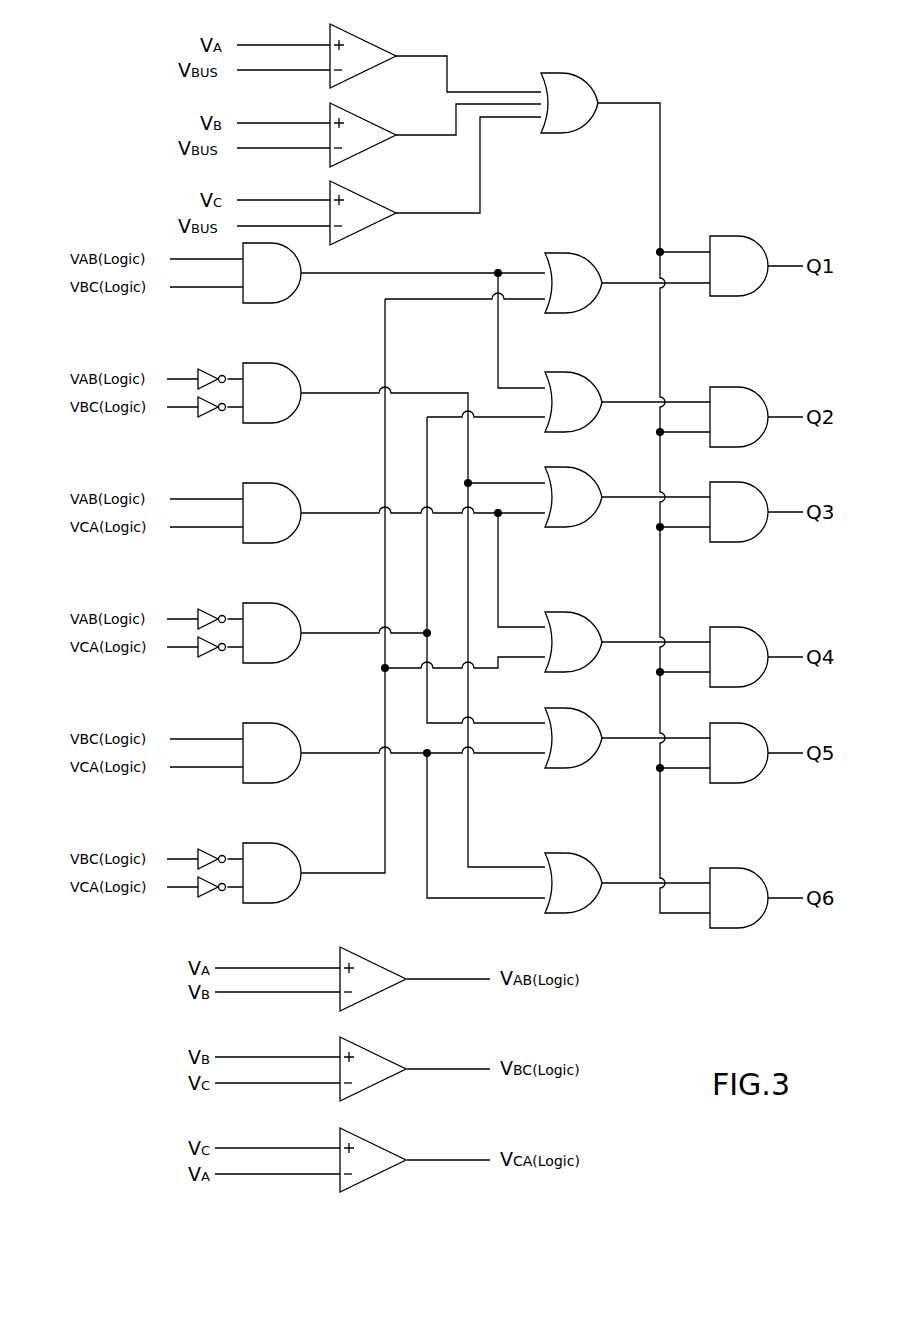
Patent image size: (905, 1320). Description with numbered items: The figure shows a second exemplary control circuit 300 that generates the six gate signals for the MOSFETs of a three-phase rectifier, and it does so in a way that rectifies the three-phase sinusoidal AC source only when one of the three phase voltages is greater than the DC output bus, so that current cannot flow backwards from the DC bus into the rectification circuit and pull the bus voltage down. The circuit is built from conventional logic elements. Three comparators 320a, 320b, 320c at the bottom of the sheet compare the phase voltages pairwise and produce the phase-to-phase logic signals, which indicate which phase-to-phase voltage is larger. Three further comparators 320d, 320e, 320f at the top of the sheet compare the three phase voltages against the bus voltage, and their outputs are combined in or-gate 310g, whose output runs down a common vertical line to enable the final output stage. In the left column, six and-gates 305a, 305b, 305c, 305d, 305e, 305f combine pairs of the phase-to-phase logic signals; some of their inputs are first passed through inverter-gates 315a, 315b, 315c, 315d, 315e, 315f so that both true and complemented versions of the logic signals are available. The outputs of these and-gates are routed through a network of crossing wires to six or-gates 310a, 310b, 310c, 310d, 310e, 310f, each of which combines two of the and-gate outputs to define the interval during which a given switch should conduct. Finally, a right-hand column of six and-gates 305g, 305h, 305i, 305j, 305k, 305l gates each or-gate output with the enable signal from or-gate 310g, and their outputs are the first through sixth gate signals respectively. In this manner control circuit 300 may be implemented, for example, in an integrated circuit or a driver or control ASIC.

The control circuit 300 is at (708, 93).
The and-gate 305a is at (272, 273).
The and-gate 305b is at (272, 393).
The and-gate 305c is at (272, 513).
The and-gate 305d is at (272, 633).
The and-gate 305e is at (272, 753).
The and-gate 305f is at (272, 873).
The and-gate 305g is at (739, 266).
The and-gate 305h is at (739, 417).
The and-gate 305i is at (739, 512).
The and-gate 305j is at (739, 657).
The and-gate 305k is at (739, 753).
The and-gate 305l is at (739, 898).
The or-gate 310a is at (573, 283).
The or-gate 310b is at (573, 402).
The or-gate 310c is at (573, 497).
The or-gate 310d is at (573, 642).
The or-gate 310e is at (573, 738).
The or-gate 310f is at (573, 883).
The or-gate 310g is at (569, 103).
The inverter-gate 315a is at (222, 375).
The inverter-gate 315b is at (222, 411).
The inverter-gate 315c is at (222, 615).
The inverter-gate 315d is at (222, 651).
The inverter-gate 315e is at (222, 855).
The inverter-gate 315f is at (222, 891).
The comparator 320a is at (379, 972).
The comparator 320b is at (379, 1063).
The comparator 320c is at (379, 1153).
The comparator 320d is at (371, 52).
The comparator 320e is at (371, 130).
The comparator 320f is at (371, 208).